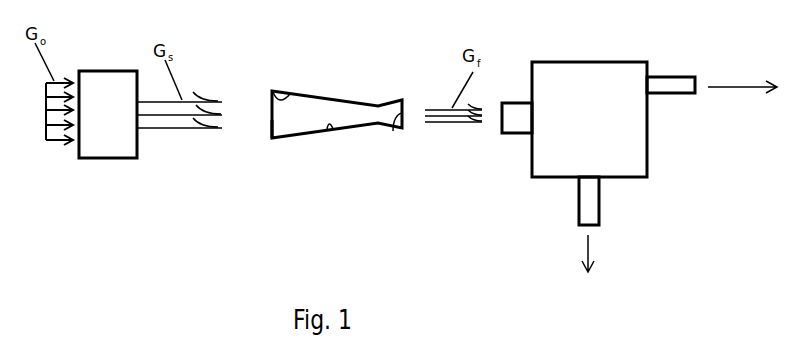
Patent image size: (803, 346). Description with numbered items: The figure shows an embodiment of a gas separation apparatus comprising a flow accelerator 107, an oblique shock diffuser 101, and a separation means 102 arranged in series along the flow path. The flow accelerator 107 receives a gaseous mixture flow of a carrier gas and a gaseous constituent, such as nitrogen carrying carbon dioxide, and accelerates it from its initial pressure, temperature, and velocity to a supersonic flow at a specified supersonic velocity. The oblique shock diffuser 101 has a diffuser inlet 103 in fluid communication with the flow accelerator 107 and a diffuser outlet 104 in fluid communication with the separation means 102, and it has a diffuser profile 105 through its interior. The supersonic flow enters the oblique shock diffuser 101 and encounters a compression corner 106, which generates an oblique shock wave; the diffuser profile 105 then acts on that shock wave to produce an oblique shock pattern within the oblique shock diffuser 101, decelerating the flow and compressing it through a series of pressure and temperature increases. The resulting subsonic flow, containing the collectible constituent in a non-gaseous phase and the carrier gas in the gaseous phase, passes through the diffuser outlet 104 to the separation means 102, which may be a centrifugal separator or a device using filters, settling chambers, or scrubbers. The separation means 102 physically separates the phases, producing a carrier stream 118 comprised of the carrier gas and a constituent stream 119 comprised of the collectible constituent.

The oblique shock diffuser 101 is at (330, 113).
The separation means 102 is at (600, 128).
The diffuser inlet 103 is at (272, 121).
The diffuser outlet 104 is at (393, 131).
The diffuser profile 105 is at (331, 129).
The compression corner 106 is at (288, 97).
The flow accelerator 107 is at (123, 126).
The carrier stream 118 is at (738, 85).
The constituent stream 119 is at (589, 248).